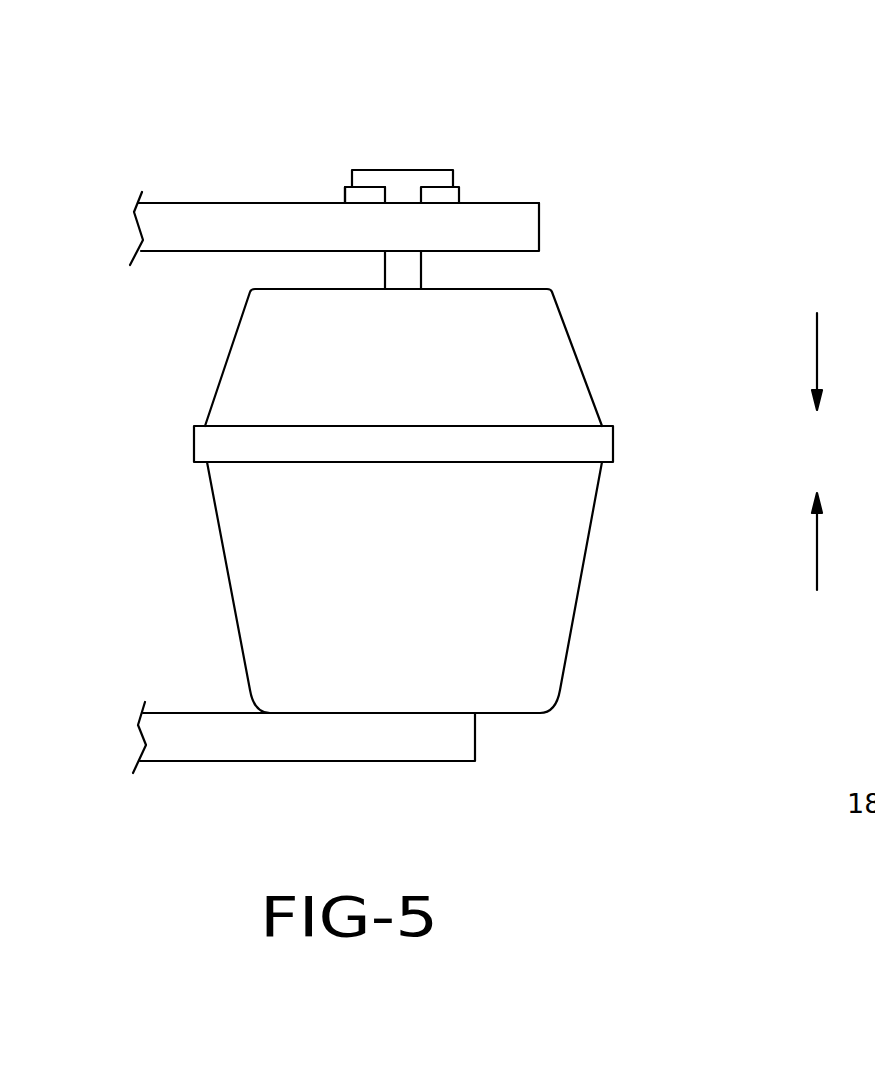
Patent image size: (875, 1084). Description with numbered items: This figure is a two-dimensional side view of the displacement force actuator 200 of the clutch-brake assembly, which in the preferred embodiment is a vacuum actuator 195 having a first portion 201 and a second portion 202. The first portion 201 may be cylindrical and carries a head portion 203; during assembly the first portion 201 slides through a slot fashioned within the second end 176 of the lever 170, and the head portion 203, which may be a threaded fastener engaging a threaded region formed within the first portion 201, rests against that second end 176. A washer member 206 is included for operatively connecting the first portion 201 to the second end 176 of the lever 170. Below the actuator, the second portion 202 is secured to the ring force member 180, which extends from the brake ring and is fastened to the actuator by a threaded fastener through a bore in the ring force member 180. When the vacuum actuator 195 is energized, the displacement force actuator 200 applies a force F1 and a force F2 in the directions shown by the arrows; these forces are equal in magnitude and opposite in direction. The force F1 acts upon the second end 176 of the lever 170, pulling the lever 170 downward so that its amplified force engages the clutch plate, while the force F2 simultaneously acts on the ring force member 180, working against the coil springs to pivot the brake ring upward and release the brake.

The lever 170 is at (192, 220).
The second end of the lever 176 is at (282, 220).
The first portion 201 is at (407, 268).
The head portion 203 is at (400, 183).
The washer member 206 is at (362, 188).
The vacuum actuator 195 is at (533, 332).
The displacement force actuator 200 is at (628, 378).
The second portion 202 is at (527, 675).
The ring force member 180 is at (230, 745).
The force F1 is at (817, 368).
The force F2 is at (815, 532).